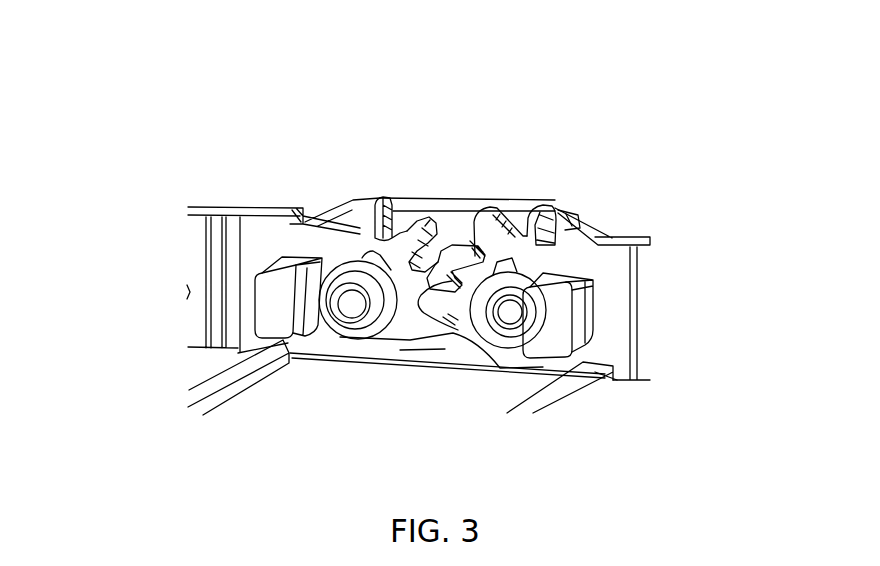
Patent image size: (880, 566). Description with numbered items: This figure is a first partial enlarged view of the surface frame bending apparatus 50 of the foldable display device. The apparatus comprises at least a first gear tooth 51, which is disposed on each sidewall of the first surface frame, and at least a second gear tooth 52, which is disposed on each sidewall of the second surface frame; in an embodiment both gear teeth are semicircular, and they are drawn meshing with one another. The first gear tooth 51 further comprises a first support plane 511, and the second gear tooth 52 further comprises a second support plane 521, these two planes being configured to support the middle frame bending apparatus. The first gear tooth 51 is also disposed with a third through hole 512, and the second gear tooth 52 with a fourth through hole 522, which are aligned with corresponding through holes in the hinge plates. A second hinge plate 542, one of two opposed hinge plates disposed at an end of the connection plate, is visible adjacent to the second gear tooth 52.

The surface frame bending apparatus 50 is at (132, 10).
The first gear tooth 51 is at (362, 227).
The first support plane 511 is at (293, 273).
The third through hole 512 is at (350, 298).
The second gear tooth 52 is at (487, 248).
The second support plane 521 is at (548, 288).
The fourth through hole 522 is at (507, 310).
The second hinge plate 542 is at (446, 230).